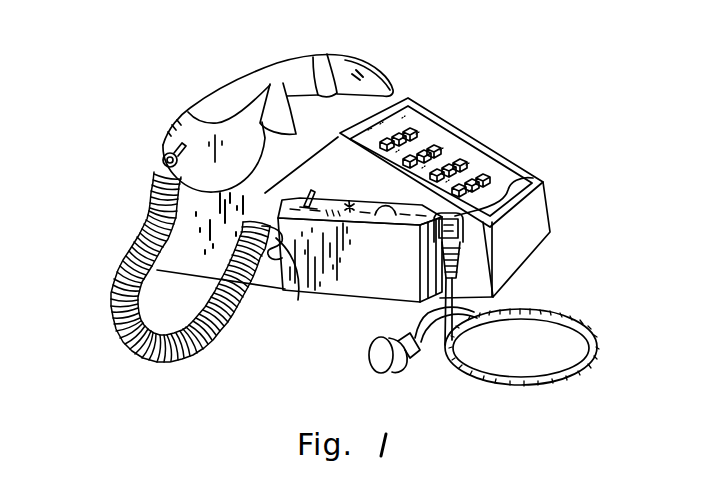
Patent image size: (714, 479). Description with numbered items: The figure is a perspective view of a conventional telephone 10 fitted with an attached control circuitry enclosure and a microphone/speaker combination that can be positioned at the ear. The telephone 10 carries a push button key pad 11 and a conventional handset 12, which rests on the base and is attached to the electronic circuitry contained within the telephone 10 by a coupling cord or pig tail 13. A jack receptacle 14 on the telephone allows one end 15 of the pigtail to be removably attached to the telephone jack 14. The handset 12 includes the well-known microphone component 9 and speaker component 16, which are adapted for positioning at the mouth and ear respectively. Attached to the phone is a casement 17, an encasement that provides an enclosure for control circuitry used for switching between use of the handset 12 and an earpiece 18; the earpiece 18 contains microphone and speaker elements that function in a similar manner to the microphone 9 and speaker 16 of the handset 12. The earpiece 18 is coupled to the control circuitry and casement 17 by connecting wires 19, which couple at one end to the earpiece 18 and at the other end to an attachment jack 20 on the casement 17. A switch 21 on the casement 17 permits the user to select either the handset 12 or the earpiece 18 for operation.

The microphone component 9 is at (205, 192).
The telephone 10 is at (407, 143).
The push button key pad 11 is at (487, 162).
The handset 12 is at (354, 77).
The coupling cord or pig tail 13 is at (110, 297).
The jack receptacle 14 is at (282, 291).
The end of the pigtail 15 is at (292, 292).
The speaker component 16 is at (388, 86).
The casement 17 is at (500, 190).
The earpiece 18 is at (386, 374).
The connecting wires 19 is at (590, 328).
The attachment jack 20 is at (456, 230).
The switch 21 is at (311, 200).